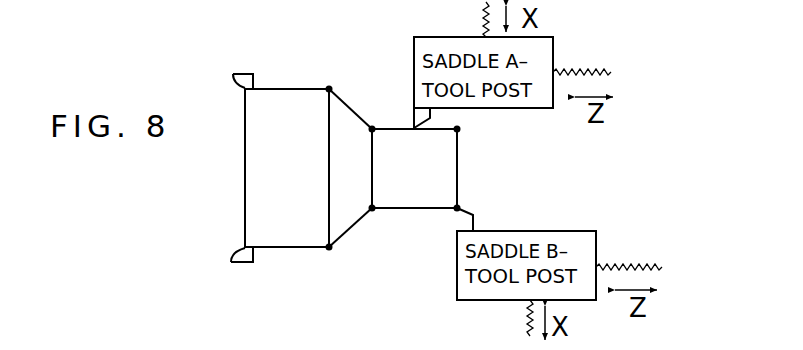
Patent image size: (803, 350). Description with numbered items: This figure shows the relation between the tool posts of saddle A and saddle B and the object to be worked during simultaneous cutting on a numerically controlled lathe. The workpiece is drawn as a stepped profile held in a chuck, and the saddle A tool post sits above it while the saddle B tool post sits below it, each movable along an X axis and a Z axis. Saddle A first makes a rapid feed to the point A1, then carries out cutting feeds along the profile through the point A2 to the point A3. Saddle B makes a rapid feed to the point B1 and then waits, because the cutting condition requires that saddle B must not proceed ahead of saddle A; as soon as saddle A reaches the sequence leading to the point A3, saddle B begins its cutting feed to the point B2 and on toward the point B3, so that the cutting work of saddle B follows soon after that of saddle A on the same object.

The saddle A tool-post point A1 is at (460, 129).
The saddle A tool-post point A2 is at (373, 126).
The saddle A tool-post point A3 is at (329, 86).
The saddle B tool-post point B1 is at (459, 205).
The saddle B tool-post point B2 is at (373, 211).
The saddle B tool-post point B3 is at (329, 250).